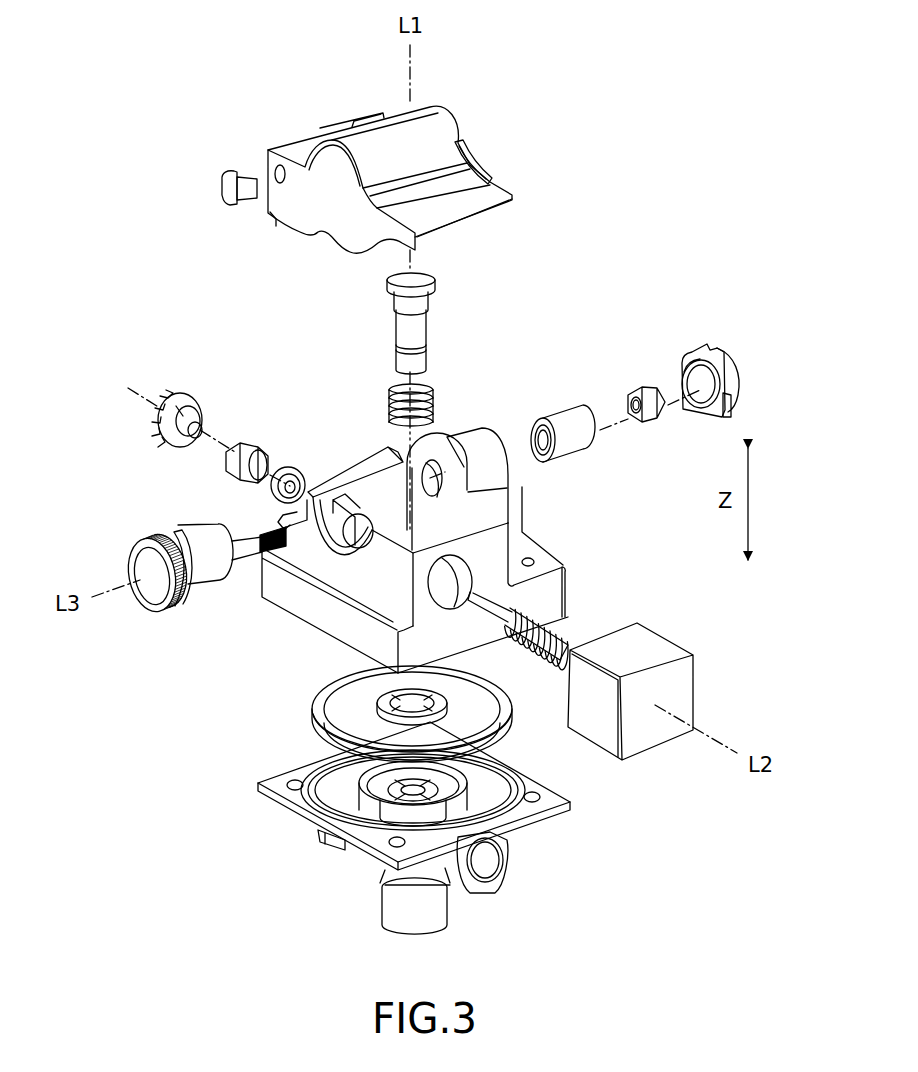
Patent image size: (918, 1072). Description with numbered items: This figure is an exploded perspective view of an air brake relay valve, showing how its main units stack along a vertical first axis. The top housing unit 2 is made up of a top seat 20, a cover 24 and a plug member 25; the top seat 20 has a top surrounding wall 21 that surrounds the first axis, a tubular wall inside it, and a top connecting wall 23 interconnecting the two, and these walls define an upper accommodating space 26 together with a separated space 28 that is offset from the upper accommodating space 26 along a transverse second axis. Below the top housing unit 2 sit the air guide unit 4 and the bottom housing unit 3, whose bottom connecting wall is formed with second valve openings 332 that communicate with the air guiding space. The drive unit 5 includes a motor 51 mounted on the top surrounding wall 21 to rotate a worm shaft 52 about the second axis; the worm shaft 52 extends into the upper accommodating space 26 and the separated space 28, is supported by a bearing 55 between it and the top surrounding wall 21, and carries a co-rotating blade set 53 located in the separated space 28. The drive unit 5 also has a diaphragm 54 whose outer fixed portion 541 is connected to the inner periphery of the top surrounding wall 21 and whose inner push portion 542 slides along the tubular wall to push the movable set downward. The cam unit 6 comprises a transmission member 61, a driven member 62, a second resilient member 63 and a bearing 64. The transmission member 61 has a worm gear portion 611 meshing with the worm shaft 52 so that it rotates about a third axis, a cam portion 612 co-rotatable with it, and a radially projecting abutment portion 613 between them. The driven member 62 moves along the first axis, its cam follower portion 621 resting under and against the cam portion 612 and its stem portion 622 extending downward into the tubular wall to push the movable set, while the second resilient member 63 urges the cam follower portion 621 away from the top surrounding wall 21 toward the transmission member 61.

The top housing unit 2 is at (394, 137).
The cover 24 is at (300, 150).
The plug member 25 is at (230, 186).
The driven member 62 is at (457, 304).
The cam follower portion 621 is at (428, 270).
The stem portion 622 is at (418, 357).
The second resilient member 63 is at (436, 398).
The blade set 53 is at (180, 393).
The bearing 55 is at (291, 468).
The separated space 28 is at (372, 455).
The bearing 64 is at (558, 410).
The top seat 20 is at (428, 536).
The top surrounding wall 21 is at (352, 608).
The top connecting wall 23 is at (420, 536).
The upper accommodating space 26 is at (516, 548).
The cam unit 6 is at (185, 591).
The transmission member 61 is at (172, 612).
The worm gear portion 611 is at (147, 542).
The cam portion 612 is at (192, 528).
The abutment portion 613 is at (172, 546).
The worm shaft 52 is at (533, 624).
The drive unit 5 is at (644, 727).
The motor 51 is at (648, 640).
The diaphragm 54 is at (397, 714).
The outer fixed portion 541 is at (506, 736).
The inner push portion 542 is at (432, 702).
The bottom housing unit 3 is at (434, 853).
The second valve openings 332 is at (487, 862).
The air guide unit 4 is at (375, 800).